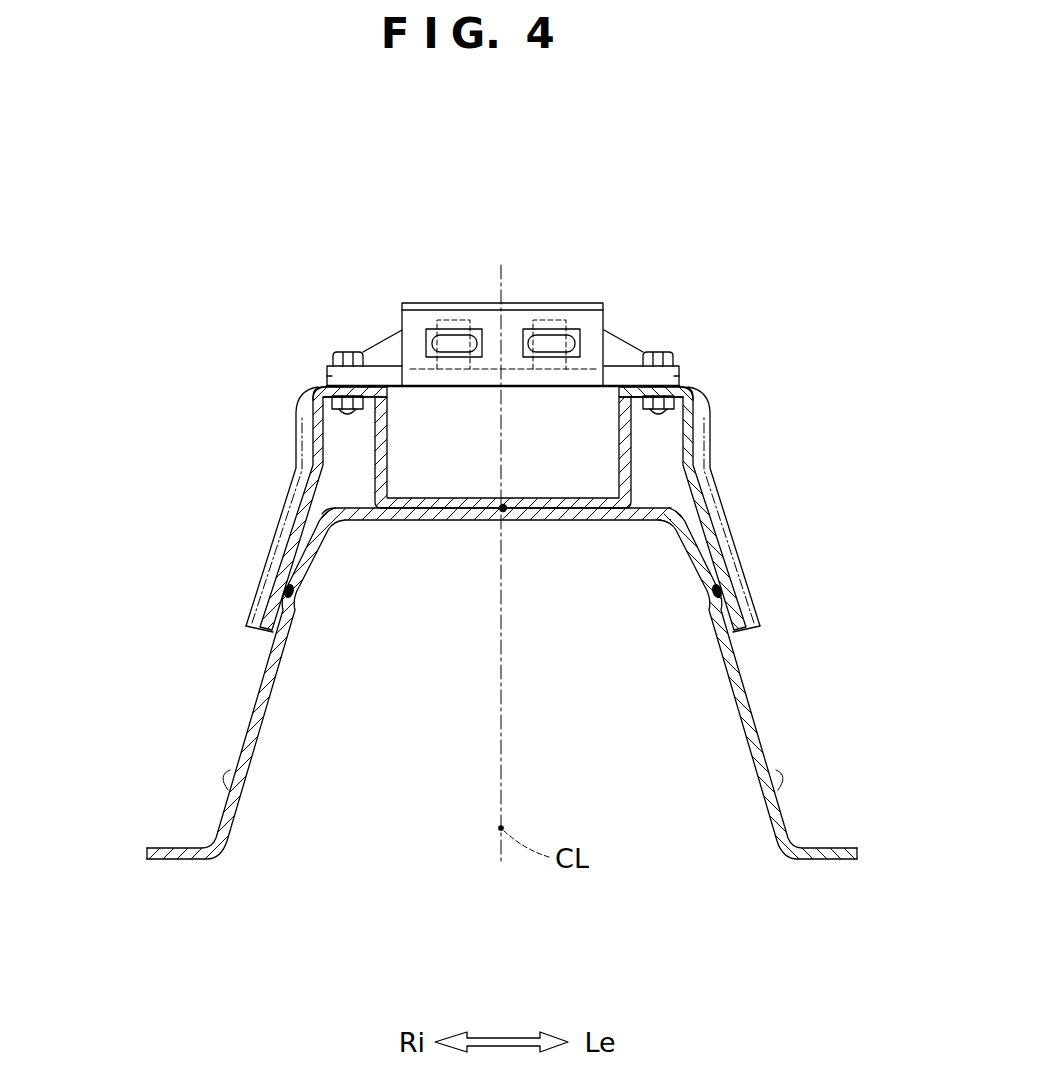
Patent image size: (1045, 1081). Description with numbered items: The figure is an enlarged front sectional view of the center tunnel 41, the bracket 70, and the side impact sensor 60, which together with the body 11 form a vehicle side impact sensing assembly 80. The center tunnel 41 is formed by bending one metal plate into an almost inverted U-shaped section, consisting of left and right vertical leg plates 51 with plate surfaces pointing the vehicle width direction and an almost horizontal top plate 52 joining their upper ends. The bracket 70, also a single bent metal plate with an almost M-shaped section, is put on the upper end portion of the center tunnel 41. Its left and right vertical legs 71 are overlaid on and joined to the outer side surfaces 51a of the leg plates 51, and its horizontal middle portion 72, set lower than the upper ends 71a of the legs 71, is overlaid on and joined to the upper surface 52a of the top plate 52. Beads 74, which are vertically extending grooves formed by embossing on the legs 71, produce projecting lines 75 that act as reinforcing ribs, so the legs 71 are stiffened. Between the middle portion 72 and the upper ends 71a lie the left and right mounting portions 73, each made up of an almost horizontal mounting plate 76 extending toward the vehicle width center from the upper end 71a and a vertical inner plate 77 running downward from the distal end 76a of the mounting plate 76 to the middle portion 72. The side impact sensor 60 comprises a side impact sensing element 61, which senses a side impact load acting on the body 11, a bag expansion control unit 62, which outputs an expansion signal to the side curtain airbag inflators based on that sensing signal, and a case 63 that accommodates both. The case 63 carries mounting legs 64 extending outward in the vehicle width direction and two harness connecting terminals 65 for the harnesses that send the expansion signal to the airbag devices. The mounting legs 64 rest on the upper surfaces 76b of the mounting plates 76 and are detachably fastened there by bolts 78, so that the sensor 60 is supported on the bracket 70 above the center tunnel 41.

The vehicle side impact sensing assembly 80 is at (264, 257).
The side impact sensor 60 is at (655, 219).
The side impact sensing element 61 is at (453, 322).
The bag expansion control unit 62 is at (550, 322).
The case 63 is at (586, 327).
The mounting legs 64 is at (330, 367).
The harness connecting terminals 65 is at (391, 341).
The bracket 70 is at (300, 467).
The legs 71 is at (308, 489).
The upper ends 71a is at (315, 394).
The middle portion 72 is at (437, 500).
The mounting portions 73 is at (458, 572).
The beads 74 is at (256, 612).
The projecting lines 75 is at (280, 562).
The mounting plates 76 is at (349, 417).
The distal ends 76a is at (400, 392).
The upper surfaces 76b is at (327, 381).
The inner plates 77 is at (437, 521).
The bolts 78 is at (345, 351).
The body 11 is at (237, 698).
The center tunnel 41 is at (234, 757).
The leg plates 51 is at (254, 746).
The side surfaces 51a is at (229, 788).
The top plate 52 is at (506, 513).
The upper surface 52a is at (327, 529).